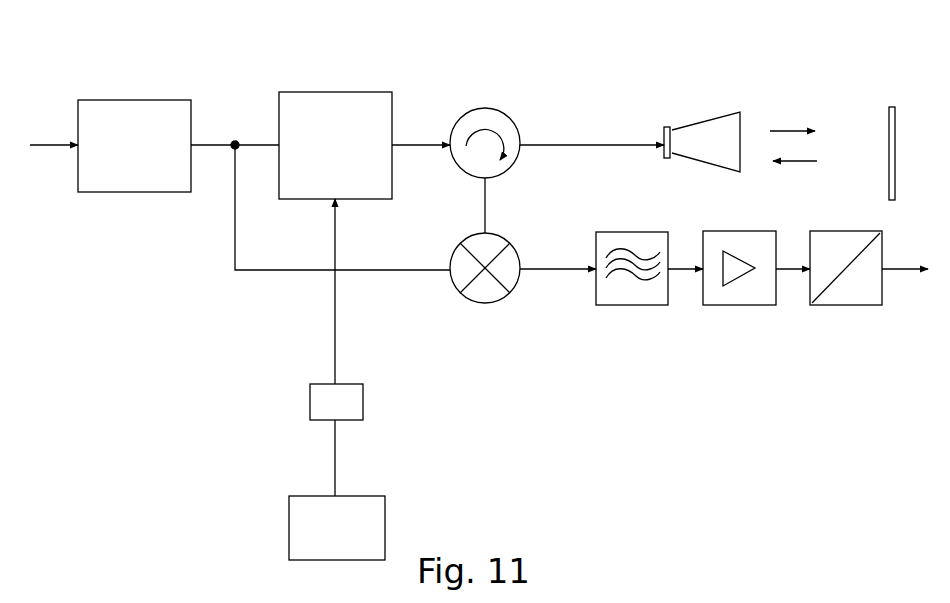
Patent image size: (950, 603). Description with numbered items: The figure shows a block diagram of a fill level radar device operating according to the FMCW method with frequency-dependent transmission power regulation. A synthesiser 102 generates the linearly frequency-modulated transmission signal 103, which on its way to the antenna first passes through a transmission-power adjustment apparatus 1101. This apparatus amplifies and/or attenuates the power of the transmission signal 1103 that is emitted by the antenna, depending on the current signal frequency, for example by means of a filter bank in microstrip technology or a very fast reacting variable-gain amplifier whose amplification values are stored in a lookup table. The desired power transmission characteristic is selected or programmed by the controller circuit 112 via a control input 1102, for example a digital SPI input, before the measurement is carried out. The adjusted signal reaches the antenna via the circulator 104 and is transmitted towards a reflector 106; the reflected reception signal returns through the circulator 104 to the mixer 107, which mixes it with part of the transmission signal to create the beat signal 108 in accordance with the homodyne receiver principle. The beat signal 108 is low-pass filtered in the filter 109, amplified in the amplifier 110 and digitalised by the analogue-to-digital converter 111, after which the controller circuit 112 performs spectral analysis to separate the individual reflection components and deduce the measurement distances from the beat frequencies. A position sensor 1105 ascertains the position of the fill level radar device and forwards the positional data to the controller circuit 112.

The synthesiser 102 is at (134, 100).
The transmission signal 103 is at (213, 143).
The transmission-power adjustment apparatus 1101 is at (340, 92).
The circulator 104 is at (483, 108).
The transmission signal emitted by the antenna 1103 is at (788, 128).
The reflector 106 is at (892, 105).
The mixer 107 is at (487, 303).
The beat signal 108 is at (555, 270).
The filter 109 is at (632, 305).
The amplifier 110 is at (740, 305).
The analogue-to-digital converter 111 is at (846, 305).
The control input 1102 is at (335, 316).
The controller circuit 112 is at (318, 403).
The position sensor 1105 is at (296, 533).